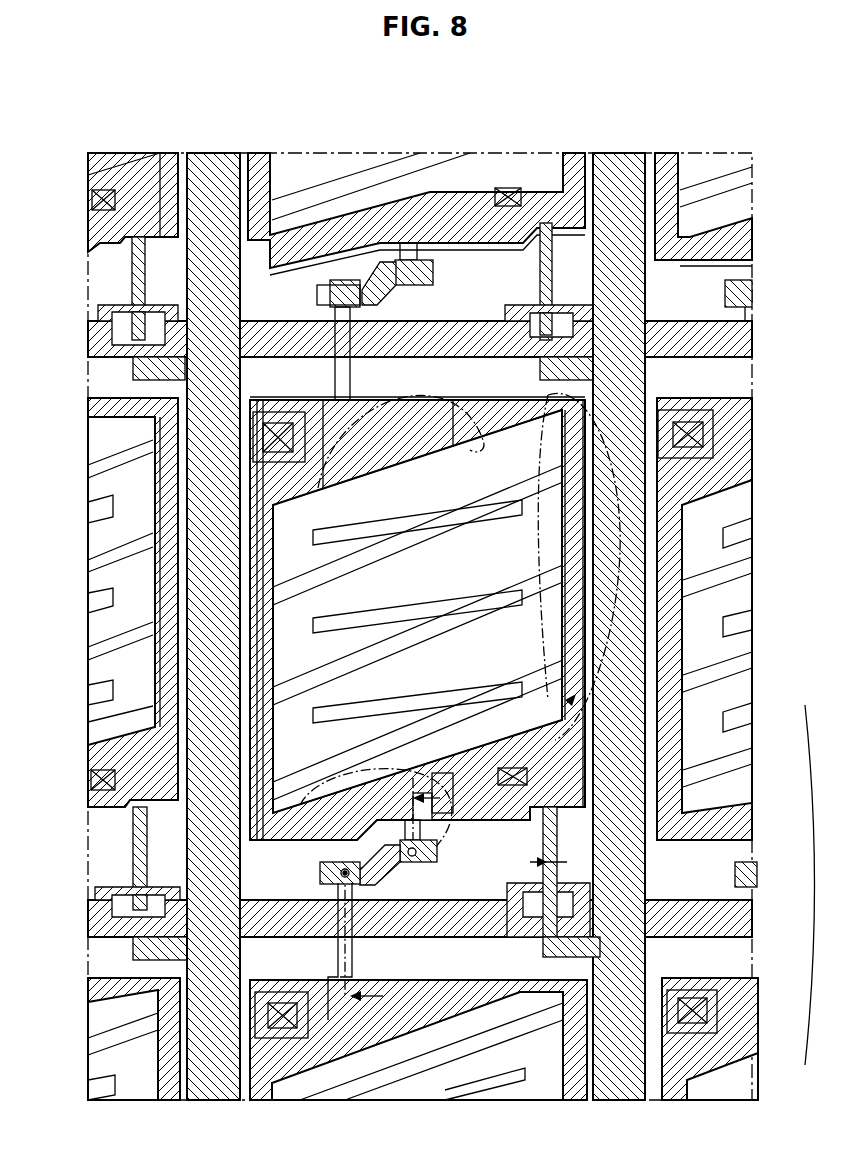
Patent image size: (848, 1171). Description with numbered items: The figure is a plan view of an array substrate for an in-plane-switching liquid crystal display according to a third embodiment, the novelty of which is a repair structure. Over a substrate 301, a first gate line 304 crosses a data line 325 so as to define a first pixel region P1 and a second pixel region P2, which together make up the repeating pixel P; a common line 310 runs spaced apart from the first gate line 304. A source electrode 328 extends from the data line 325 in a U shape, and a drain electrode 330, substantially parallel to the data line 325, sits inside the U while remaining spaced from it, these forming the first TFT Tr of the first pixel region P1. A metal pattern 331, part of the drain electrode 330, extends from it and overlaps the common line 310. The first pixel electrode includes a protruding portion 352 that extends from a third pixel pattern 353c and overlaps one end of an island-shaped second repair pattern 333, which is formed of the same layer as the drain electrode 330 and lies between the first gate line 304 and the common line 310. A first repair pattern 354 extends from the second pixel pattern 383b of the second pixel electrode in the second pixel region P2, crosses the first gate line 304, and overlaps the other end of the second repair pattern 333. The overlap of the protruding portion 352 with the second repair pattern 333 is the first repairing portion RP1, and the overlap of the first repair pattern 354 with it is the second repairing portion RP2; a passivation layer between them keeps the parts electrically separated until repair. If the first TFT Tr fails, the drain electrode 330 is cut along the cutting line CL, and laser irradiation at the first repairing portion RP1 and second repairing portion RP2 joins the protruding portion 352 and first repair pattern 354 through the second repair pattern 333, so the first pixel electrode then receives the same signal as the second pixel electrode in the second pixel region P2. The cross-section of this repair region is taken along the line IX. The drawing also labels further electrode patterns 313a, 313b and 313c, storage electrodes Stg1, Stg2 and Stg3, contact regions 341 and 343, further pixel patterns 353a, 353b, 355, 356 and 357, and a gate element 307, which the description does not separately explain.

The substrate 301 is at (575, 113).
The first gate line 304 is at (676, 908).
The gate electrode 307 is at (530, 882).
The common line 310 is at (262, 833).
The first stem electrode 313a is at (262, 623).
The second stem electrode 313b is at (590, 594).
The third stem electrode 313c is at (268, 392).
The data line 325 is at (192, 664).
The source electrode 328 is at (573, 893).
The drain electrode 330 is at (455, 818).
The metal pattern 331 is at (458, 820).
The second repair pattern 333 is at (397, 880).
The first contact hole 341 is at (256, 437).
The second contact hole 343 is at (520, 762).
The protruding portion 352 is at (430, 870).
The first semiconductor region 353a is at (575, 700).
The second semiconductor region 353b is at (455, 388).
The third pixel pattern 353c is at (448, 758).
The first repair pattern 354 is at (333, 890).
The pixel electrode 355 is at (387, 690).
The frame electrode 356 is at (262, 528).
The slit 357 is at (350, 748).
The second pixel pattern 383b is at (423, 978).
The first storage electrode Stg1 is at (317, 783).
The second storage electrode Stg2 is at (537, 573).
The third storage electrode Stg3 is at (383, 462).
The first repairing portion RP1 is at (424, 860).
The second repairing portion RP2 is at (333, 868).
The cutting line CL is at (535, 856).
The first TFT Tr is at (544, 889).
The pixel P is at (816, 885).
The first pixel region P1 is at (705, 713).
The second pixel region P2 is at (520, 1020).
The line IX- IX is at (405, 894).